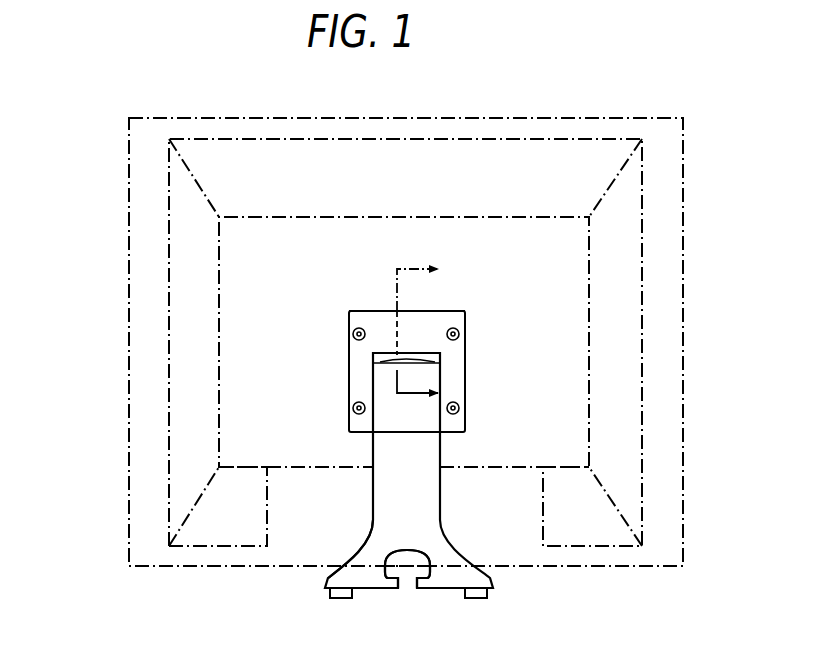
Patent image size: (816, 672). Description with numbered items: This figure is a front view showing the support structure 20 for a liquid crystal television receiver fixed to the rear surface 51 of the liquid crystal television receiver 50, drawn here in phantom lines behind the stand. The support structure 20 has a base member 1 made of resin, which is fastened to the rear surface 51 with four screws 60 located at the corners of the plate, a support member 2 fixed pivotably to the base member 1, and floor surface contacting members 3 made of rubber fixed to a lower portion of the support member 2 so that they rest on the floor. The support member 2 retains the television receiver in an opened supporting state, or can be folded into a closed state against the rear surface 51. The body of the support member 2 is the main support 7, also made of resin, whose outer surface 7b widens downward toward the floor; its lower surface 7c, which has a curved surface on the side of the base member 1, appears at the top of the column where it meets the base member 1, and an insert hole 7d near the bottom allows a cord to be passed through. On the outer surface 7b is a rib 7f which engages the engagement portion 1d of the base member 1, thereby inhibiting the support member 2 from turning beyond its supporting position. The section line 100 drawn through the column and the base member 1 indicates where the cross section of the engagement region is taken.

The base member 1 is at (377, 320).
The engagement portion 1d is at (408, 358).
The support member 2 is at (445, 455).
The floor surface contacting members 3 is at (340, 599).
The main support 7 is at (405, 455).
The outer surface 7b is at (403, 502).
The lower surface 7c is at (375, 356).
The rib 7f is at (420, 362).
The insert hole 7d is at (410, 556).
The support structure 20 is at (334, 290).
The liquid crystal television receiver 50 is at (129, 248).
The rear surface 51 is at (240, 343).
The screws 60 is at (354, 331).
The section line 100 is at (412, 336).